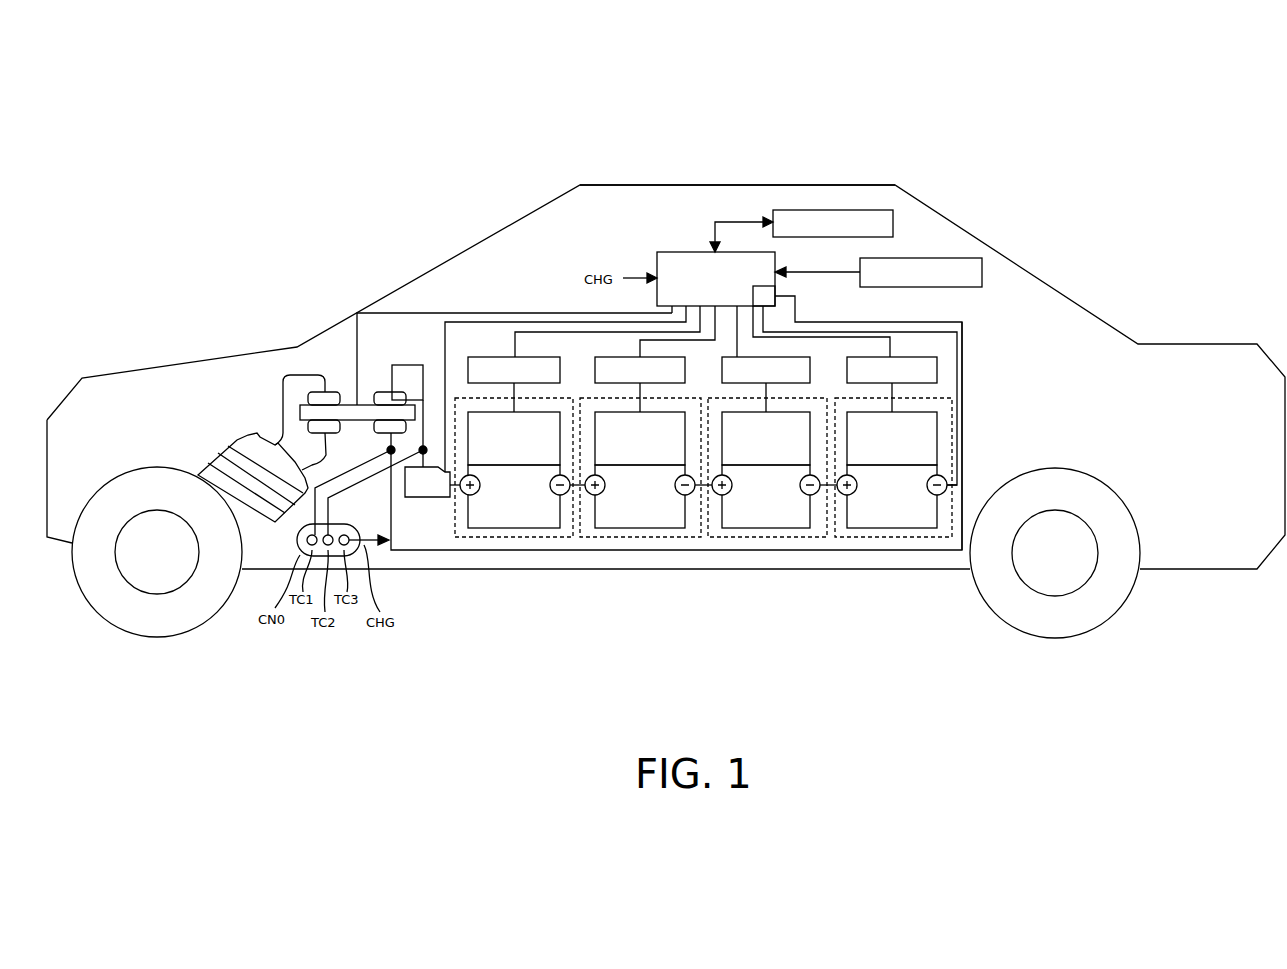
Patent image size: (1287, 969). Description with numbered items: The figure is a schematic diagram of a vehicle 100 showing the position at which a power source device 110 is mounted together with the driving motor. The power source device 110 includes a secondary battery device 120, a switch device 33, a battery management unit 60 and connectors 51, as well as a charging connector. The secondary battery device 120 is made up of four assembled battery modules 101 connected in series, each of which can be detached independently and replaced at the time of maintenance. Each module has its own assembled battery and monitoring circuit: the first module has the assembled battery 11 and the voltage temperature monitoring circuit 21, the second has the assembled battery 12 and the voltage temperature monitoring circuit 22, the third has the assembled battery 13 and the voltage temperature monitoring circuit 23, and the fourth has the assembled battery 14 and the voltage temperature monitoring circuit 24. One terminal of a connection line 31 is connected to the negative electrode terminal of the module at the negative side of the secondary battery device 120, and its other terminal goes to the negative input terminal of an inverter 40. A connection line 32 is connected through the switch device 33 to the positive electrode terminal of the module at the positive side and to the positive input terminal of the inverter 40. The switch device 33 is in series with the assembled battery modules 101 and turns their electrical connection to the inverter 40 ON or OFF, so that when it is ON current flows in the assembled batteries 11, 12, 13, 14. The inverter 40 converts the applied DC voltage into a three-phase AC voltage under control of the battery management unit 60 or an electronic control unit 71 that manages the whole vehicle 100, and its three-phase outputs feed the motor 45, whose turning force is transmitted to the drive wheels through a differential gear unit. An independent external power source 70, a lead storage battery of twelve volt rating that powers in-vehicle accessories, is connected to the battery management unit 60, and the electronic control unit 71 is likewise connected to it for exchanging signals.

The vehicle 100 is at (1175, 358).
The power source device 110 is at (838, 176).
The secondary battery device 120 is at (976, 434).
The battery management unit 60 is at (684, 252).
The electronic control unit 71 is at (773, 210).
The external power source 70 is at (978, 287).
The connection line 31 is at (964, 388).
The connection line 32 is at (407, 365).
The switch device 33 is at (433, 497).
The inverter 40 is at (356, 420).
The motor 45 is at (205, 470).
The connectors 51 is at (478, 357).
The voltage temperature monitoring circuit 24 is at (470, 410).
The voltage temperature monitoring circuit 23 is at (597, 410).
The voltage temperature monitoring circuit 22 is at (723, 410).
The voltage temperature monitoring circuit 21 is at (848, 410).
The assembled battery 14 is at (520, 528).
The assembled battery 13 is at (645, 528).
The assembled battery 12 is at (772, 528).
The assembled battery 11 is at (892, 528).
The assembled battery modules 101 is at (925, 622).